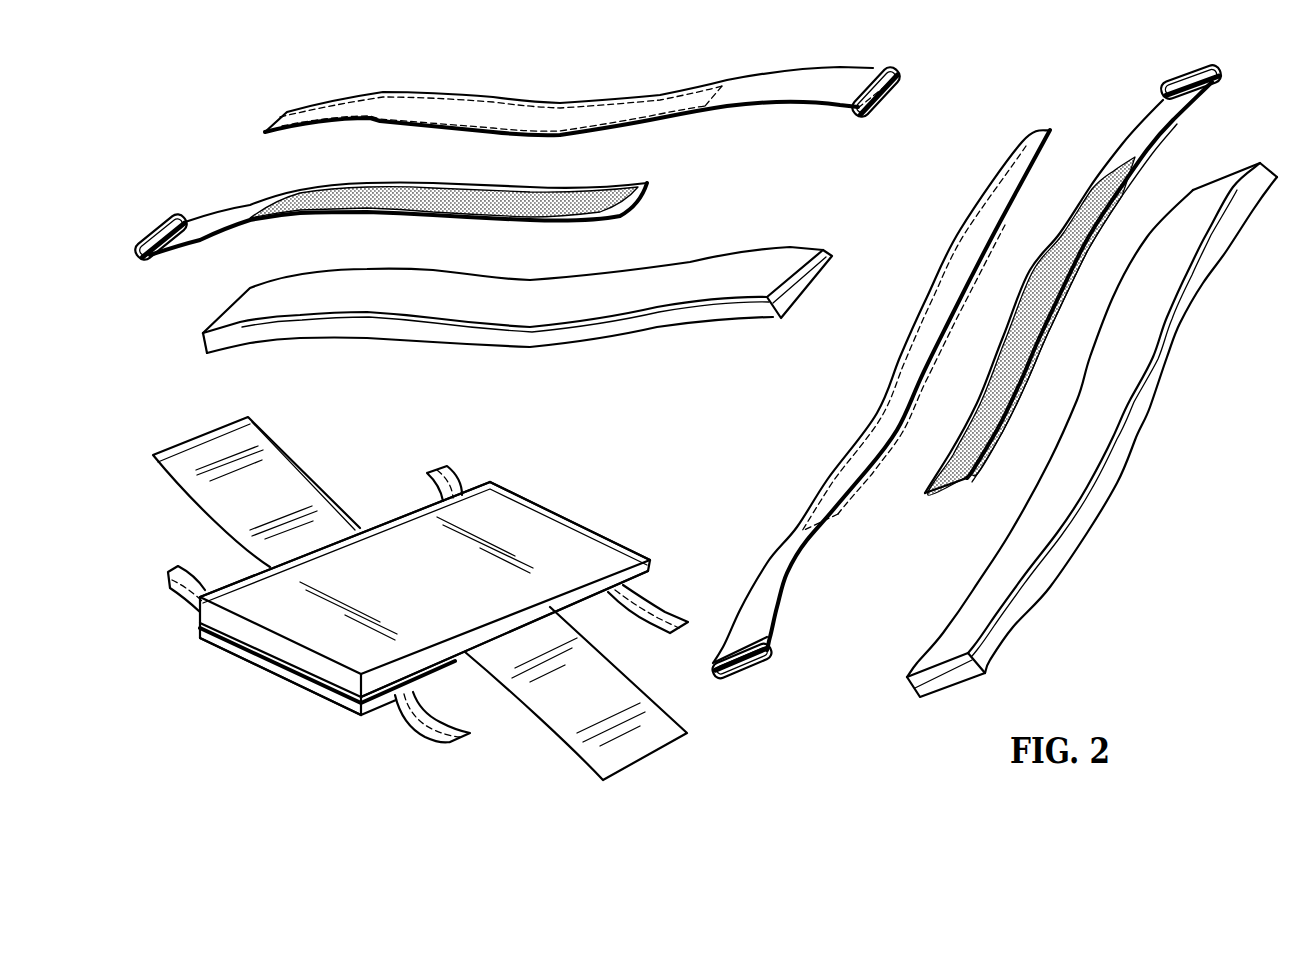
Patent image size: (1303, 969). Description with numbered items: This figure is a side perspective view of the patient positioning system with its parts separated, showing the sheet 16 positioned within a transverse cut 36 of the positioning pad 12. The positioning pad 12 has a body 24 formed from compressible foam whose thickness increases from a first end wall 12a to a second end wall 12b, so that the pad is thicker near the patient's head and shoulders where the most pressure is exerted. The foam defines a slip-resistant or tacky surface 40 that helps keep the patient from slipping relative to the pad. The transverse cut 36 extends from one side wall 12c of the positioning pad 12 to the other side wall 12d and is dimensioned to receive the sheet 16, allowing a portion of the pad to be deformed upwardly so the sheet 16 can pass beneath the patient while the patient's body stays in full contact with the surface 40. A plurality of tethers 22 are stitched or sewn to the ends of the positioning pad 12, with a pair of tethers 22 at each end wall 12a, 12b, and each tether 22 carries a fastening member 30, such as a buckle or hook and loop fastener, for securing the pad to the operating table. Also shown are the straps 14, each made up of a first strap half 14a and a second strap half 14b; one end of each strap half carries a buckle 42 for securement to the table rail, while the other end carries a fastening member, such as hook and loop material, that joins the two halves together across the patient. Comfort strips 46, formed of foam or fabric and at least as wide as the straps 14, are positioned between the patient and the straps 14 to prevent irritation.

The positioning pad 12 is at (562, 512).
The first end wall 12a is at (604, 540).
The second end wall 12b is at (282, 673).
The side wall 12c is at (391, 519).
The side wall 12d is at (450, 655).
The strap 14 is at (559, 88).
The first strap half 14a is at (798, 80).
The second strap half 14b is at (228, 218).
The sheet 16 is at (651, 760).
The tether 22 is at (188, 570).
The body 24 is at (517, 494).
The fastening member 30 is at (655, 596).
The transverse cut 36 is at (352, 702).
The slip-resistant surface 40 is at (475, 518).
The buckle 42 is at (873, 105).
The comfort strip 46 is at (705, 265).